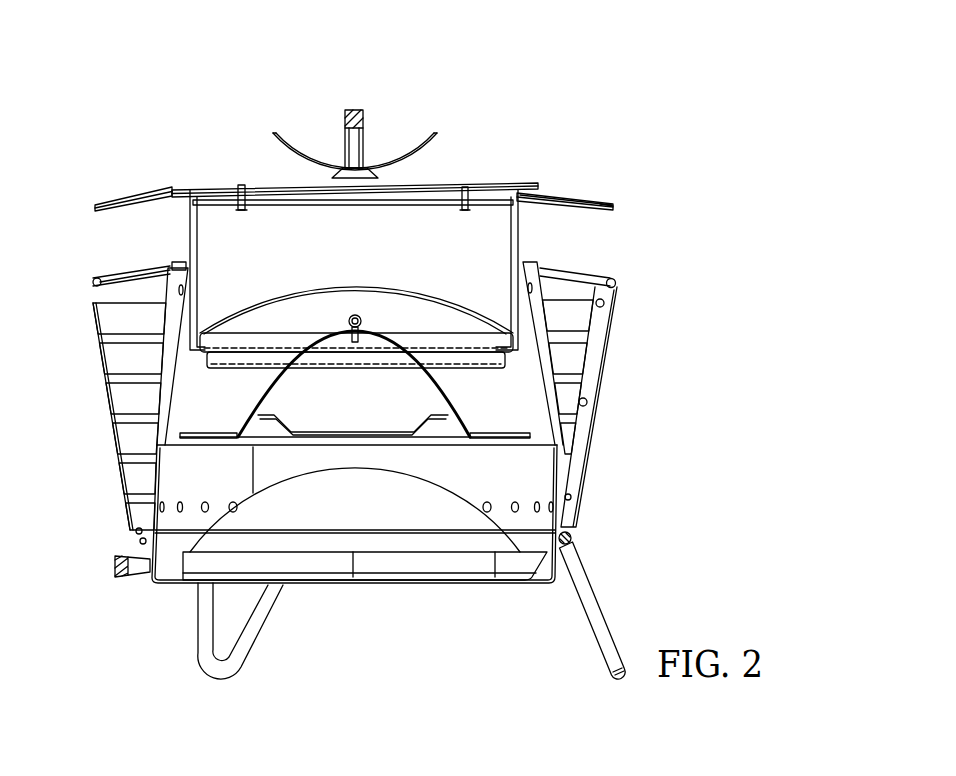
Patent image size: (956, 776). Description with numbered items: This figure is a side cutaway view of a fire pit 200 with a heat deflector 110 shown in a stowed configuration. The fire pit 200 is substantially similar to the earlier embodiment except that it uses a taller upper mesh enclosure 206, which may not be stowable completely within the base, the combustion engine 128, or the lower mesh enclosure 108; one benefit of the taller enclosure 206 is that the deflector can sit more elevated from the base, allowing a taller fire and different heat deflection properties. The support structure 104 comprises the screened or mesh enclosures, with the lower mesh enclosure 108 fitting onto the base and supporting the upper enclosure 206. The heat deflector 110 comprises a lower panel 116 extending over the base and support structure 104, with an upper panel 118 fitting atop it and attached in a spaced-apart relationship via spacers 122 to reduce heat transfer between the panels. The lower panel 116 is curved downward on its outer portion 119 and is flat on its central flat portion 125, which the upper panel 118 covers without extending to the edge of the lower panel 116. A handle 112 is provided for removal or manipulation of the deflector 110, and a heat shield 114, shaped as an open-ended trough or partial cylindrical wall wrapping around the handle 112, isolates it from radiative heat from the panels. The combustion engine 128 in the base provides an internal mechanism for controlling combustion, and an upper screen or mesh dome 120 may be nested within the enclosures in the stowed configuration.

The fire pit 200 is at (620, 95).
The support structure 104 is at (181, 345).
The lower mesh enclosure 108 is at (173, 303).
The heat deflector 110 is at (132, 189).
The handle 112 is at (354, 108).
The heat shield 114 is at (401, 143).
The lower panel 116 is at (568, 197).
The upper panel 118 is at (205, 185).
The outer portion 119 is at (603, 198).
The mesh dome 120 is at (414, 290).
The spacers 122 is at (242, 184).
The central flat portion 125 is at (300, 205).
The combustion engine 128 is at (561, 364).
The upper mesh enclosure 206 is at (519, 224).